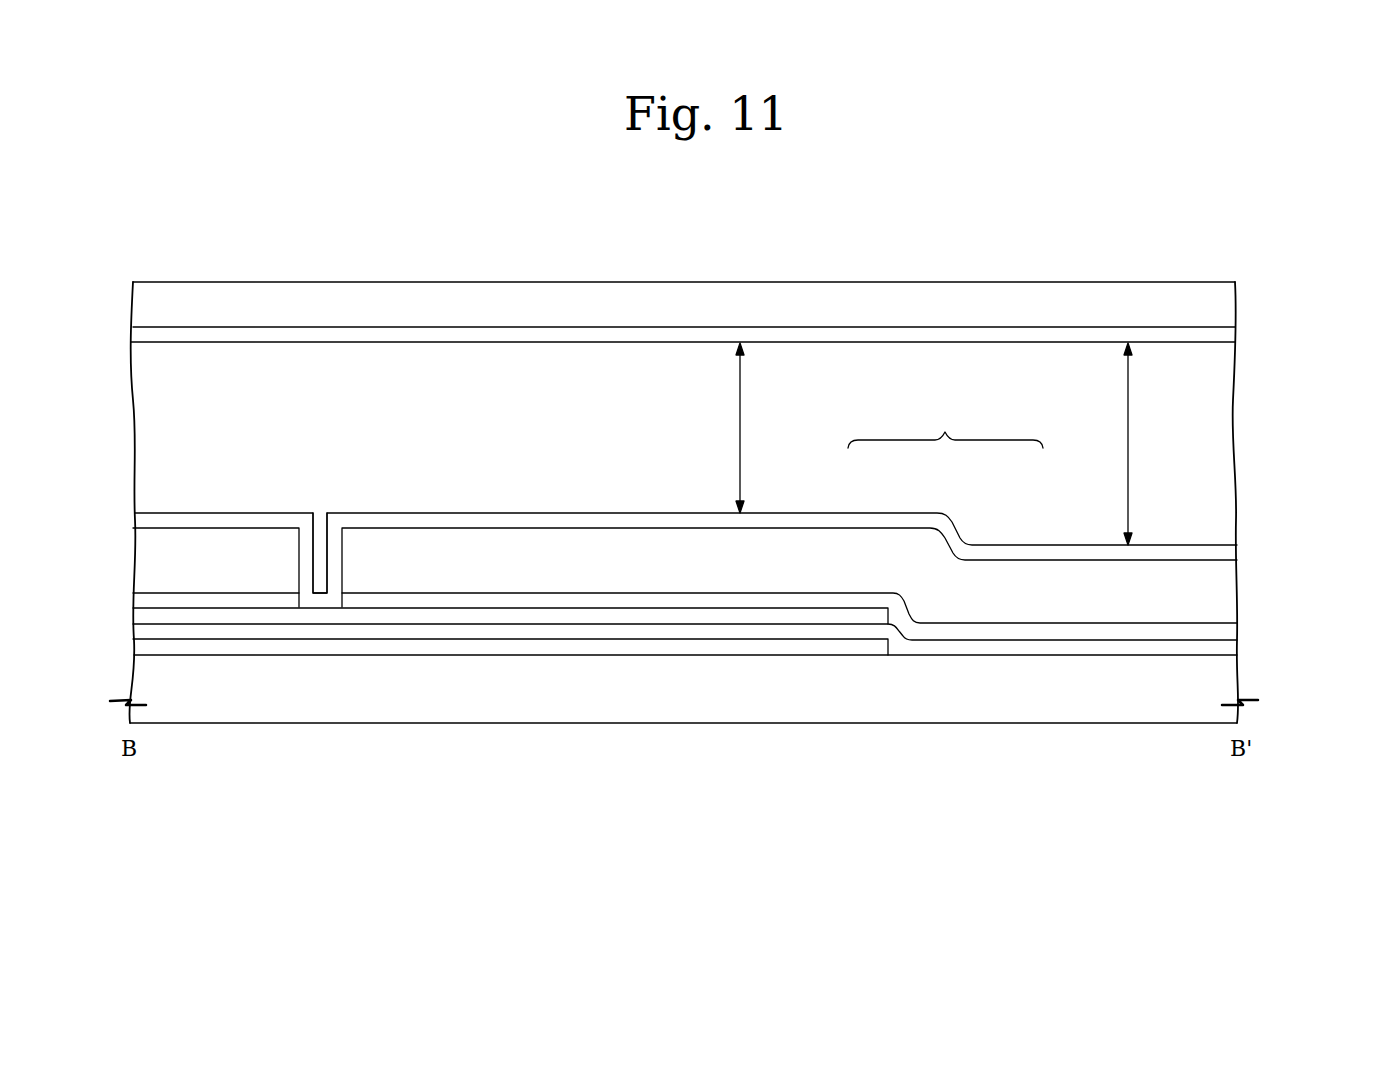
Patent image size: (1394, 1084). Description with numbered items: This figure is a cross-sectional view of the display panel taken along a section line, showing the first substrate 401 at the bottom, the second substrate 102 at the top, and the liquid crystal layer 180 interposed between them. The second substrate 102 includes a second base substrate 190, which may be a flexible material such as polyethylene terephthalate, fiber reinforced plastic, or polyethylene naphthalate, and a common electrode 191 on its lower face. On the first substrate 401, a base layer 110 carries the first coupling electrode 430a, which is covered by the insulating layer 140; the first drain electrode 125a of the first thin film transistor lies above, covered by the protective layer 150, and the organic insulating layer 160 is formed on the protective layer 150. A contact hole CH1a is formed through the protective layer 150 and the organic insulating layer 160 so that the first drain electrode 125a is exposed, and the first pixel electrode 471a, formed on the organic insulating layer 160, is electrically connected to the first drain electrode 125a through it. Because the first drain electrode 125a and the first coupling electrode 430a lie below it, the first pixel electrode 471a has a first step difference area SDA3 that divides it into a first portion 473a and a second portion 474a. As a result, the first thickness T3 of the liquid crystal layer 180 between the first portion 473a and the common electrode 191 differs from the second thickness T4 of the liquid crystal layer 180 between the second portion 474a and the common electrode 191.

The second base substrate 190 is at (1232, 303).
The common electrode 191 is at (1232, 332).
The second substrate 102 is at (1325, 292).
The liquid crystal layer 180 is at (1232, 440).
The organic insulating layer 160 is at (1232, 593).
The protective layer 150 is at (1232, 631).
The insulating layer 140 is at (1232, 650).
The lower substrate 110 is at (1232, 678).
The first substrate 401 is at (1325, 583).
The first drain electrode 125a is at (137, 615).
The first coupling electrode 430a is at (585, 647).
The contact hole CH1a is at (343, 560).
The first pixel electrode 471a is at (945, 475).
The first portion 473a is at (867, 520).
The first step difference area SDA3 is at (955, 525).
The second portion 474a is at (1005, 553).
The first thickness T3 is at (754, 428).
The second thickness T4 is at (1142, 444).